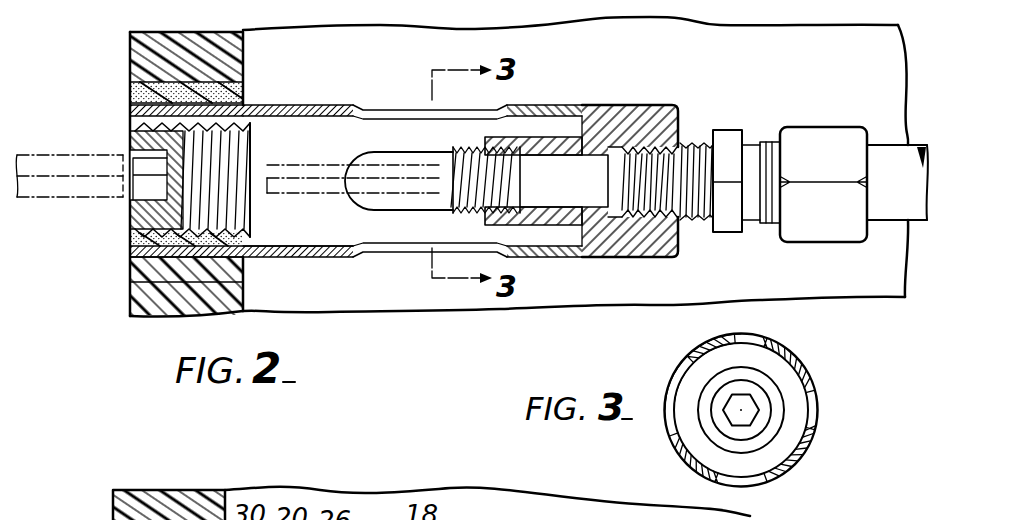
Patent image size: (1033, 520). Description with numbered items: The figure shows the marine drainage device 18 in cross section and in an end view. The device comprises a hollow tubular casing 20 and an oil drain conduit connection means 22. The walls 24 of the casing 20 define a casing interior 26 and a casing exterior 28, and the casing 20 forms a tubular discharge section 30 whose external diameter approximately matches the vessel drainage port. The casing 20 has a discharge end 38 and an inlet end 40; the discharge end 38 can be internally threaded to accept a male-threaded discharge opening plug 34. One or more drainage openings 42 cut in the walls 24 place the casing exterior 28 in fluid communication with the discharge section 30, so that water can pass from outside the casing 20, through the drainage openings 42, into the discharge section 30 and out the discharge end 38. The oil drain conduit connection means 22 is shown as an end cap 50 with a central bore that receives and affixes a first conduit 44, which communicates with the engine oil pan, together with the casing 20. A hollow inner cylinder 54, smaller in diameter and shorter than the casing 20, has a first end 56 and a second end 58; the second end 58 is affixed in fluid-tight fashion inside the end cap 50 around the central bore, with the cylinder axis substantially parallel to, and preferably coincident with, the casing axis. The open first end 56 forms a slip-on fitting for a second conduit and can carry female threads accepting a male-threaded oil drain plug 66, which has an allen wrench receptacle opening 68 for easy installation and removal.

In FIG. 2, the marine drainage device 18 is at (625, 45).
In FIG. 2, the casing 20 is at (303, 98).
In FIG. 3, the casing 20 is at (840, 336).
In FIG. 2, the oil drain conduit connection means 22 is at (646, 264).
In FIG. 2, the walls 24 is at (322, 259).
In FIG. 3, the walls 24 is at (723, 335).
In FIG. 2, the casing interior 26 is at (332, 128).
In FIG. 3, the casing interior 26 is at (688, 437).
In FIG. 2, the casing exterior 28 is at (278, 292).
In FIG. 3, the casing exterior 28 is at (690, 463).
In FIG. 2, the tubular discharge section 30 is at (263, 100).
In FIG. 2, the discharge opening plug 34 is at (252, 165).
In FIG. 2, the discharge end 38 is at (273, 232).
In FIG. 2, the inlet end 40 is at (546, 142).
In FIG. 2, the drainage openings 42 is at (483, 98).
In FIG. 3, the drainage openings 42 is at (797, 363).
In FIG. 2, the first conduit 44 is at (880, 147).
In FIG. 2, the end cap 50 is at (683, 126).
In FIG. 2, the inner cylinder 54 is at (563, 226).
In FIG. 2, the first end 56 is at (597, 145).
In FIG. 2, the second end 58 is at (487, 138).
In FIG. 3, the second end 58 is at (773, 425).
In FIG. 2, the oil drain plug 66 is at (455, 212).
In FIG. 3, the oil drain plug 66 is at (755, 430).
In FIG. 3, the allen wrench receptacle opening 68 is at (755, 417).